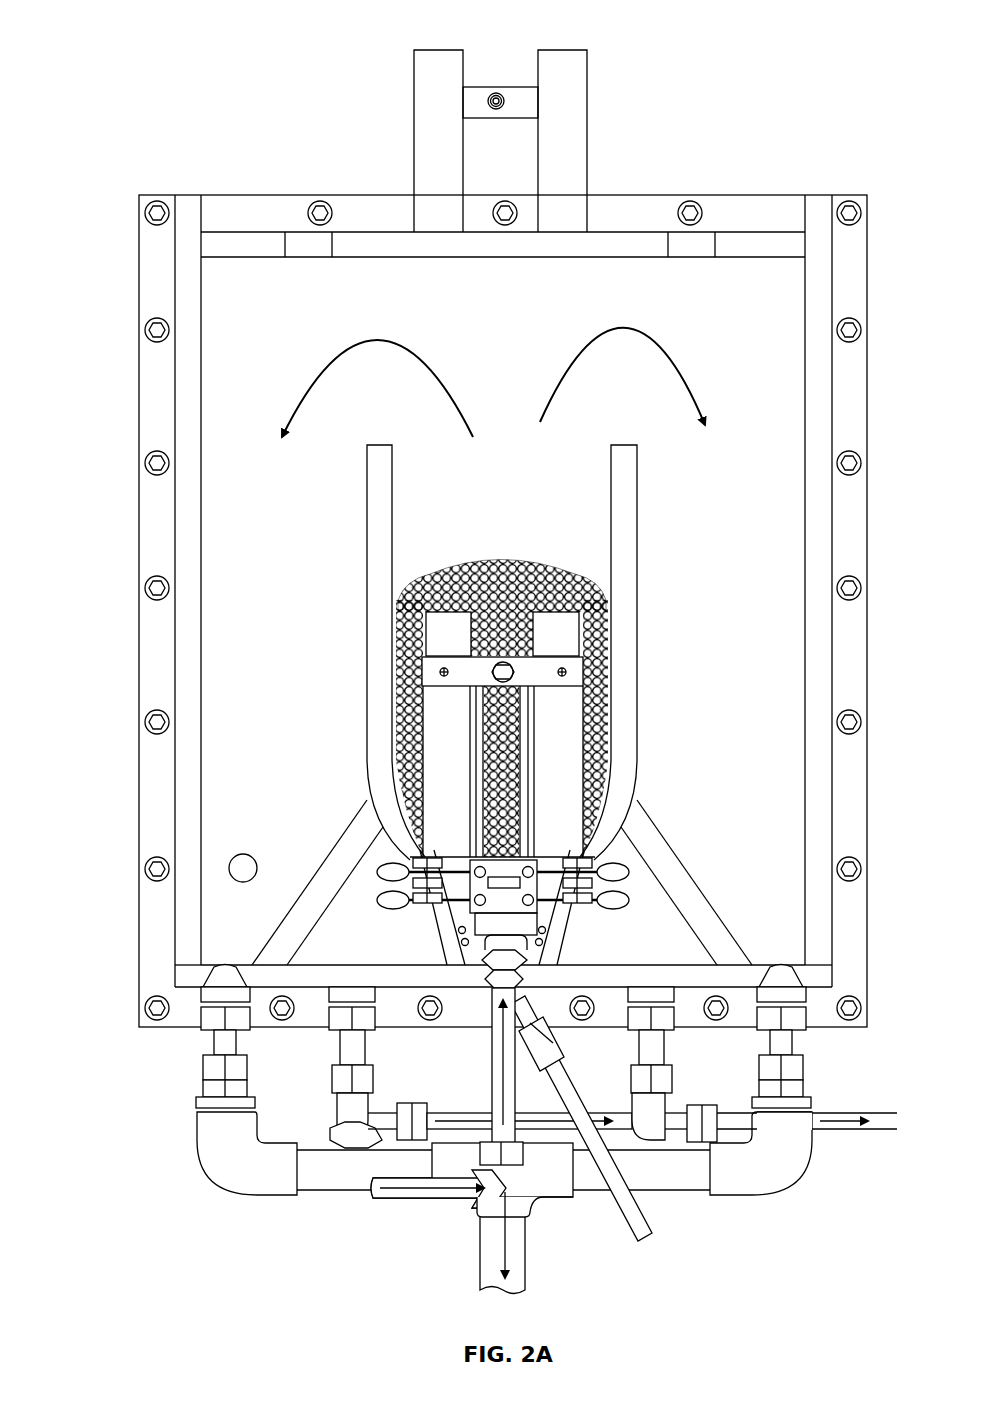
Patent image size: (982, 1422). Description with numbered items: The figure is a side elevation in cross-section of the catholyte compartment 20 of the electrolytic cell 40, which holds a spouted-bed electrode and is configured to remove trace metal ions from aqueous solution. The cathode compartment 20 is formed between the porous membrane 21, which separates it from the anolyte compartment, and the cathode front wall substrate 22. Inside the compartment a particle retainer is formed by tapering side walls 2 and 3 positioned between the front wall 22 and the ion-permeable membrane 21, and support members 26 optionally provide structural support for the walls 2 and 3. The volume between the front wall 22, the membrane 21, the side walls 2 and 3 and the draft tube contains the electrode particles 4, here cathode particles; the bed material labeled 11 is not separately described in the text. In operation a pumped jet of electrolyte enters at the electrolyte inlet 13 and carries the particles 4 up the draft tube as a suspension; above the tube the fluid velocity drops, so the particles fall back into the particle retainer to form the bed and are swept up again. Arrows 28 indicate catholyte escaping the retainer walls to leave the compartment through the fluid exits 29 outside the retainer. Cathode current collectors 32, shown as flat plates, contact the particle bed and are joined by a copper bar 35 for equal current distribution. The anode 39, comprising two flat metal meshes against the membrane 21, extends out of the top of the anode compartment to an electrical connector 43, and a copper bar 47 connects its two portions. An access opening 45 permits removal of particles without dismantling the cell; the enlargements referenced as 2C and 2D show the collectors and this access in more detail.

The tapering side wall 2 is at (385, 537).
The tapering side wall 3 is at (625, 545).
The electrode particles 4 is at (428, 612).
The beads 11 is at (415, 765).
The electrolyte inlet 13 is at (500, 1052).
The catholyte compartment 20 is at (232, 796).
The porous membrane 21 is at (238, 875).
The cathode front wall substrate 22 is at (818, 836).
The support members 26 is at (325, 905).
The catholyte flow arrows 28 is at (330, 364).
The fluid exit 29 is at (232, 1163).
The cathode current collector 32 is at (447, 630).
The copper bar 35 is at (565, 676).
The anode 39 is at (437, 155).
The electrolytic cell 40 is at (215, 195).
The electrical connector 43 is at (496, 92).
The access opening 45 is at (600, 828).
The copper bar 47 is at (473, 103).
The left chamber wall 2C is at (435, 710).
The right chamber wall 2D is at (630, 883).